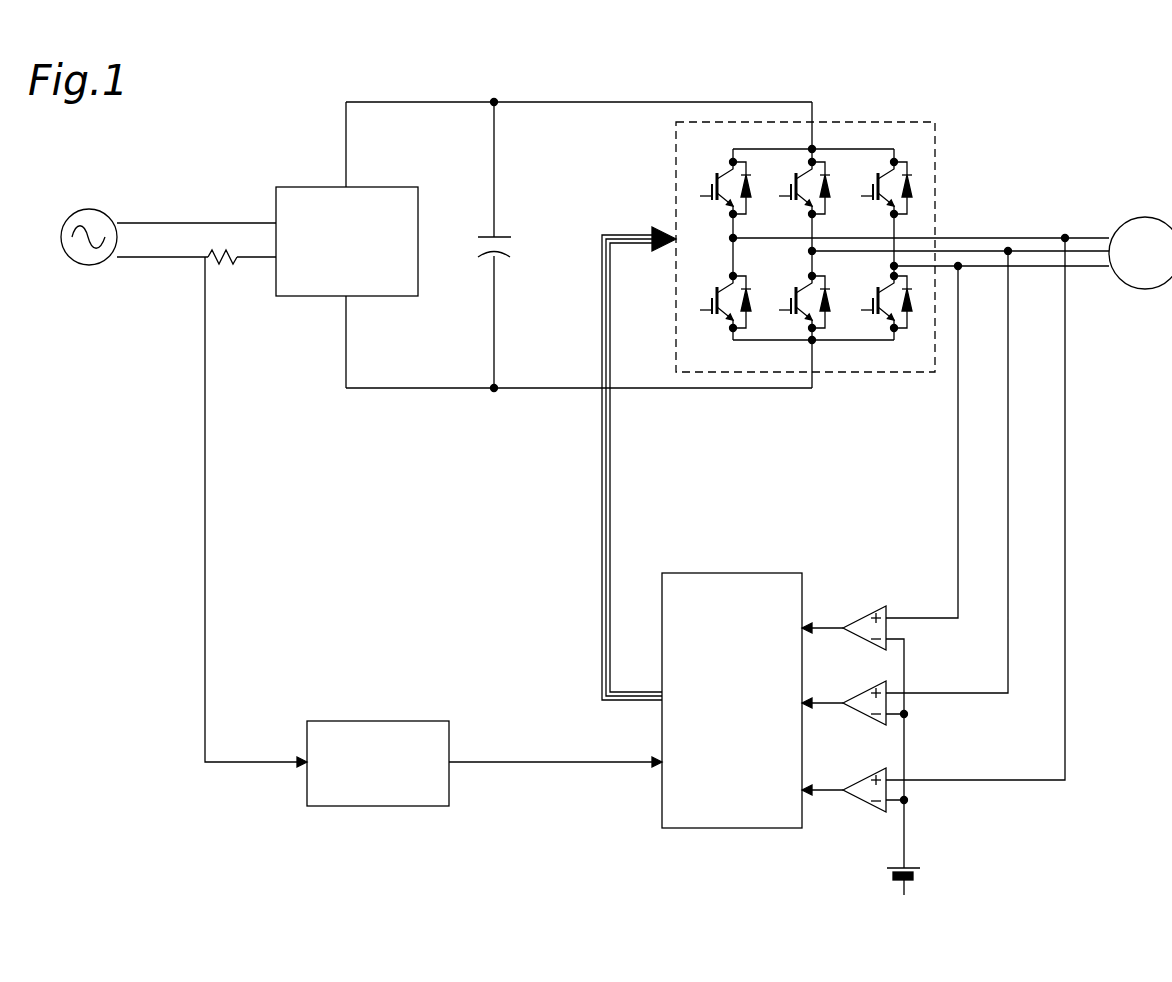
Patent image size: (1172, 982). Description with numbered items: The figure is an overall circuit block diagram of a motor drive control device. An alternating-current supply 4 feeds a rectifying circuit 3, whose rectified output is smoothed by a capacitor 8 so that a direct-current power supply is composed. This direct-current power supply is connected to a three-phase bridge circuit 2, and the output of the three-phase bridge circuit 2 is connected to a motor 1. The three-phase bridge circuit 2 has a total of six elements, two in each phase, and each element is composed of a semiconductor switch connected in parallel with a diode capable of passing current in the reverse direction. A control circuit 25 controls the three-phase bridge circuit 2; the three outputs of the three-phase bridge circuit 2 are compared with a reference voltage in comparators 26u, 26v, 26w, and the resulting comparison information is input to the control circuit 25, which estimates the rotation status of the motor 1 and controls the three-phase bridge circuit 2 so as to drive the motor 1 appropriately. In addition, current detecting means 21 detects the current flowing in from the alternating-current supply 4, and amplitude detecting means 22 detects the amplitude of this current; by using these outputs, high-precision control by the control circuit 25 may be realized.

The motor 1 is at (1143, 217).
The three-phase bridge circuit 2 is at (914, 122).
The rectifying circuit 3 is at (303, 187).
The alternating-current supply 4 is at (90, 209).
The capacitor 8 is at (481, 237).
The current detecting means 21 is at (196, 272).
The amplitude detecting means 22 is at (384, 721).
The control circuit 25 is at (740, 573).
The comparator 26u is at (862, 619).
The comparator 26v is at (862, 694).
The comparator 26w is at (862, 781).